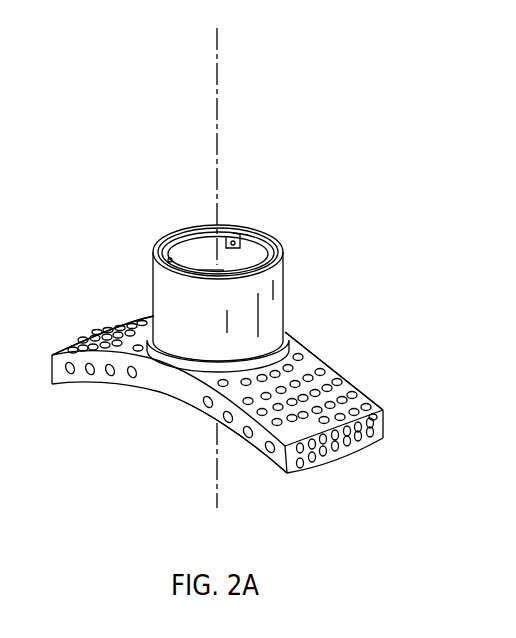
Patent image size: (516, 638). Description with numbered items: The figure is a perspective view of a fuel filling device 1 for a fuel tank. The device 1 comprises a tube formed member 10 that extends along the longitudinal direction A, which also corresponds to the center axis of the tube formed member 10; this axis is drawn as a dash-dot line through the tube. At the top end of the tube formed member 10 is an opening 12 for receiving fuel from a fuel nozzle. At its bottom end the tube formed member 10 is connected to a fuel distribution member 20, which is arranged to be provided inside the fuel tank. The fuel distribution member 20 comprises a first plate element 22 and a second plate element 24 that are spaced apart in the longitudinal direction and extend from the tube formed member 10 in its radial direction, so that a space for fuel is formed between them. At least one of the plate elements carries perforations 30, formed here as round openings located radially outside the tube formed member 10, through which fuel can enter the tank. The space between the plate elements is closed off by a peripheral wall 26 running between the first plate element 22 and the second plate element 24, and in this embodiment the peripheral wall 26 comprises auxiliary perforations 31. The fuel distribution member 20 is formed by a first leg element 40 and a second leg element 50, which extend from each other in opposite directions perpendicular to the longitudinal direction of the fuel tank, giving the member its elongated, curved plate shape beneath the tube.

The device 1 is at (248, 266).
The tube formed member 10 is at (190, 272).
The opening 12 is at (187, 218).
The fuel distribution member 20 is at (248, 402).
The first plate element 22 is at (308, 362).
The second plate element 24 is at (252, 461).
The peripheral wall 26 is at (290, 468).
The perforations 30 is at (365, 407).
The auxiliary perforations 31 is at (372, 451).
The first leg element 40 is at (93, 318).
The second leg element 50 is at (392, 390).